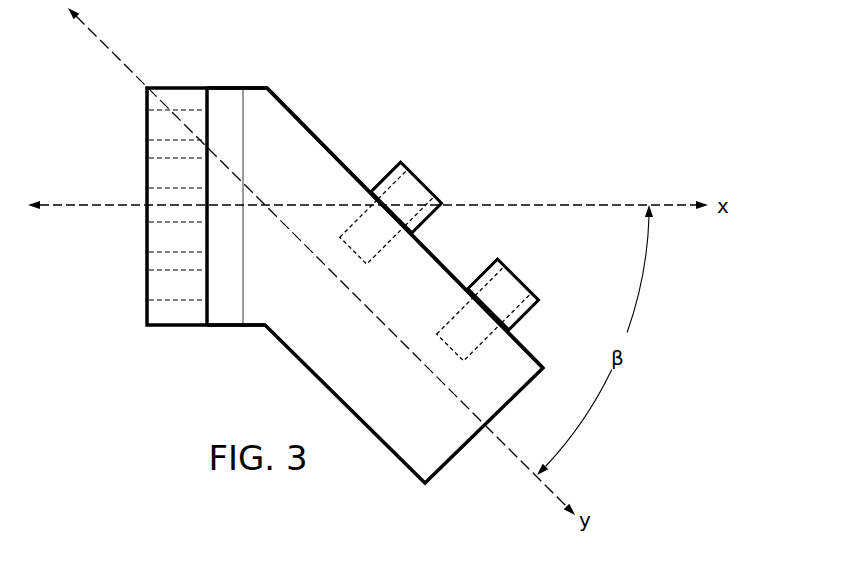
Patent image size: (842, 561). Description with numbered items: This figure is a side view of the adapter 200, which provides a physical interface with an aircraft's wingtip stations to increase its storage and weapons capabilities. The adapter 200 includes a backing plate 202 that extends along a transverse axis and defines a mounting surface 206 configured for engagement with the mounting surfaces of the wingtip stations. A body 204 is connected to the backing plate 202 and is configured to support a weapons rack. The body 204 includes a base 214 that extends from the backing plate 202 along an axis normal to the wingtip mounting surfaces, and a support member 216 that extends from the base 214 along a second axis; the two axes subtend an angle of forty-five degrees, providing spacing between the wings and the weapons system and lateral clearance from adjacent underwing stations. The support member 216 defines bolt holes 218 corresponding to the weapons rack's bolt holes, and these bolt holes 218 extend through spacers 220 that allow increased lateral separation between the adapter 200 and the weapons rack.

The adapter 200 is at (336, 249).
The backing plate 202 is at (133, 206).
The body 204 is at (254, 80).
The mounting surface 206 is at (146, 262).
The base 214 is at (257, 314).
The support member 216 is at (446, 266).
The bolt holes 218 is at (338, 258).
The spacers 220 is at (386, 178).